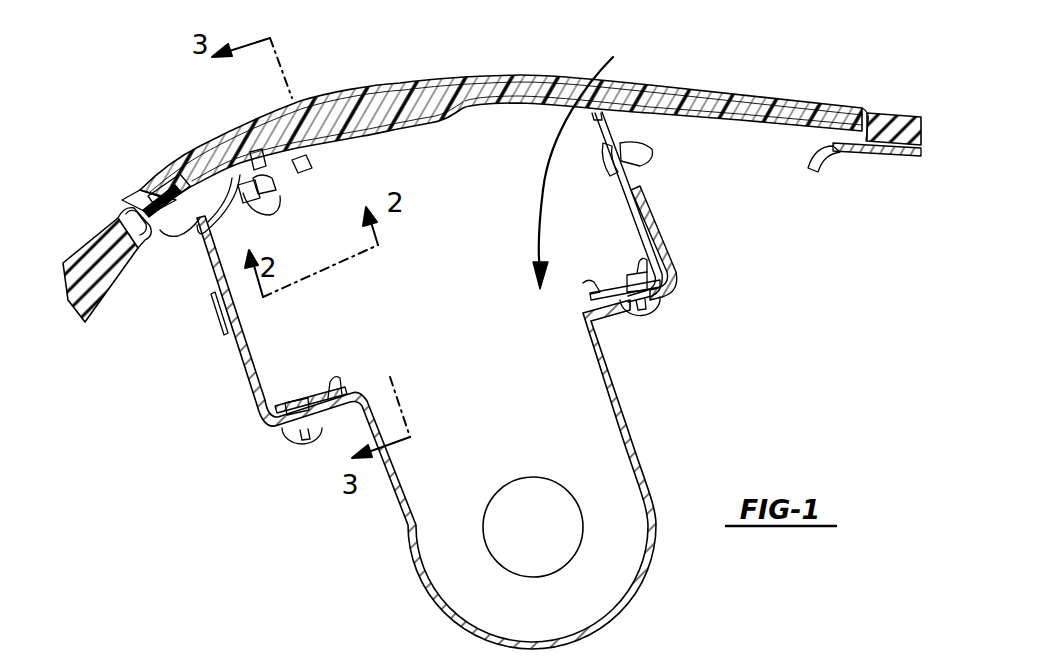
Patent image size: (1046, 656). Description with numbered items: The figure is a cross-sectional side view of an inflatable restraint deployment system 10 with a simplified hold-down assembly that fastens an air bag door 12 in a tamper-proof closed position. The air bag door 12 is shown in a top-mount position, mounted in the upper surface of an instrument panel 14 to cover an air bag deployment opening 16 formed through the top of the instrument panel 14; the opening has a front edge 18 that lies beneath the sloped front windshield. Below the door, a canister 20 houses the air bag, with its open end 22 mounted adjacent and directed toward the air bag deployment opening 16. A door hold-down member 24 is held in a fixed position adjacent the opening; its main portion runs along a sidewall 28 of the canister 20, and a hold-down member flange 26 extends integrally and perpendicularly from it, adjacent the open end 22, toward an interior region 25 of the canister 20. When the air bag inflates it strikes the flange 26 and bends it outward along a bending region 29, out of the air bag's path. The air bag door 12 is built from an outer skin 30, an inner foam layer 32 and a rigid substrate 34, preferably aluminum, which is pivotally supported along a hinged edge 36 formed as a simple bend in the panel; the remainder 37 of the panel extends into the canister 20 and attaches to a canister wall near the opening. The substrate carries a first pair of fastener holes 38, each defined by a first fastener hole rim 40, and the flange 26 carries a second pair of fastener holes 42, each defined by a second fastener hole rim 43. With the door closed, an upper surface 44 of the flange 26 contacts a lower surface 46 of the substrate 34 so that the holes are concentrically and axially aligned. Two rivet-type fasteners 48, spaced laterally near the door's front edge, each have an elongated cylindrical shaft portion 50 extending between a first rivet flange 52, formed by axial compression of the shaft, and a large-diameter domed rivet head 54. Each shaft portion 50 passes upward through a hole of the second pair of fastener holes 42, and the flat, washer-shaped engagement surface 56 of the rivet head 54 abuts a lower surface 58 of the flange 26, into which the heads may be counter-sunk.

The inflatable restraint deployment system 10 is at (722, 325).
The air bag door 12 is at (463, 62).
The instrument panel 14 is at (884, 110).
The air bag deployment opening 16 is at (392, 150).
The front edge 18 is at (110, 217).
The canister 20 is at (655, 470).
The open end 22 is at (585, 160).
The door hold-down member 24 is at (210, 288).
The interior region 25 is at (495, 248).
The hold-down member flange 26 is at (228, 214).
The sidewall 28 is at (248, 348).
The bending region 29 is at (147, 186).
The outer skin 30 is at (398, 80).
The inner foam layer 32 is at (540, 78).
The rigid substrate 34 is at (450, 112).
The hinged edge 36 is at (615, 82).
The remainder of the panel 37 is at (630, 229).
The first pair of fastener holes 38 is at (242, 150).
The first fastener hole rim 40 is at (286, 108).
The second pair of fastener holes 42 is at (262, 202).
The second fastener hole rim 43 is at (272, 188).
The upper surface 44 is at (186, 160).
The lower surface 46 is at (470, 80).
The rivet-type fastener 48 is at (213, 145).
The shaft portion 50 is at (334, 95).
The first rivet flange 52 is at (242, 195).
The rivet head 54 is at (296, 168).
The engagement surface 56 is at (256, 192).
The lower surface 58 is at (192, 235).